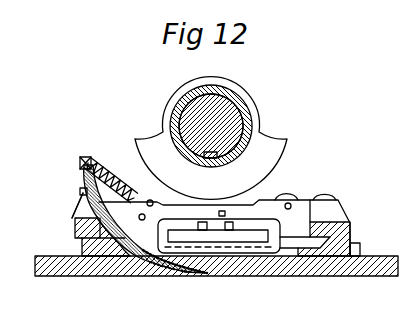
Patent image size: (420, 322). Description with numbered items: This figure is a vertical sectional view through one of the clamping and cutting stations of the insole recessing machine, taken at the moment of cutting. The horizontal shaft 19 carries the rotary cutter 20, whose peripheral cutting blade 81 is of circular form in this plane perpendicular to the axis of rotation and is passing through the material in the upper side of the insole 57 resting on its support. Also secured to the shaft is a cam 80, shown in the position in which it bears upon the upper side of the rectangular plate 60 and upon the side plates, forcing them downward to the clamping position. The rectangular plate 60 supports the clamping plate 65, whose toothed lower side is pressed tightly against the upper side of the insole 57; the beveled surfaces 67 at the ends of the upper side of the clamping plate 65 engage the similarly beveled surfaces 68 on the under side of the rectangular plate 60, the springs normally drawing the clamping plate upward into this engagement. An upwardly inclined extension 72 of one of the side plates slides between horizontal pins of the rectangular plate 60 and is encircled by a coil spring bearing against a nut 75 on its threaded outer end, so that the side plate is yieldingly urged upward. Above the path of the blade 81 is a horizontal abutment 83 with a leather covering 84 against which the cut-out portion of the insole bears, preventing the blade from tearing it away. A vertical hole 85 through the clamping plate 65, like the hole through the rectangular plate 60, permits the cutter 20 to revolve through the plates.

The insole 57 is at (258, 268).
The horizontal shaft 19 is at (192, 120).
The rotary cutter 20 is at (80, 193).
The rectangular plate 60 is at (345, 216).
The clamping plate 65 is at (105, 255).
The beveled surface 67 is at (82, 246).
The beveled surface 68 is at (75, 223).
The upwardly inclined extension 72 is at (80, 158).
The nut 75 is at (96, 160).
The cam 80 is at (288, 140).
The peripheral cutting blade 81 is at (163, 269).
The horizontal abutment 83 is at (223, 212).
The leather covering 84 is at (312, 206).
The vertical hole 85 is at (293, 252).